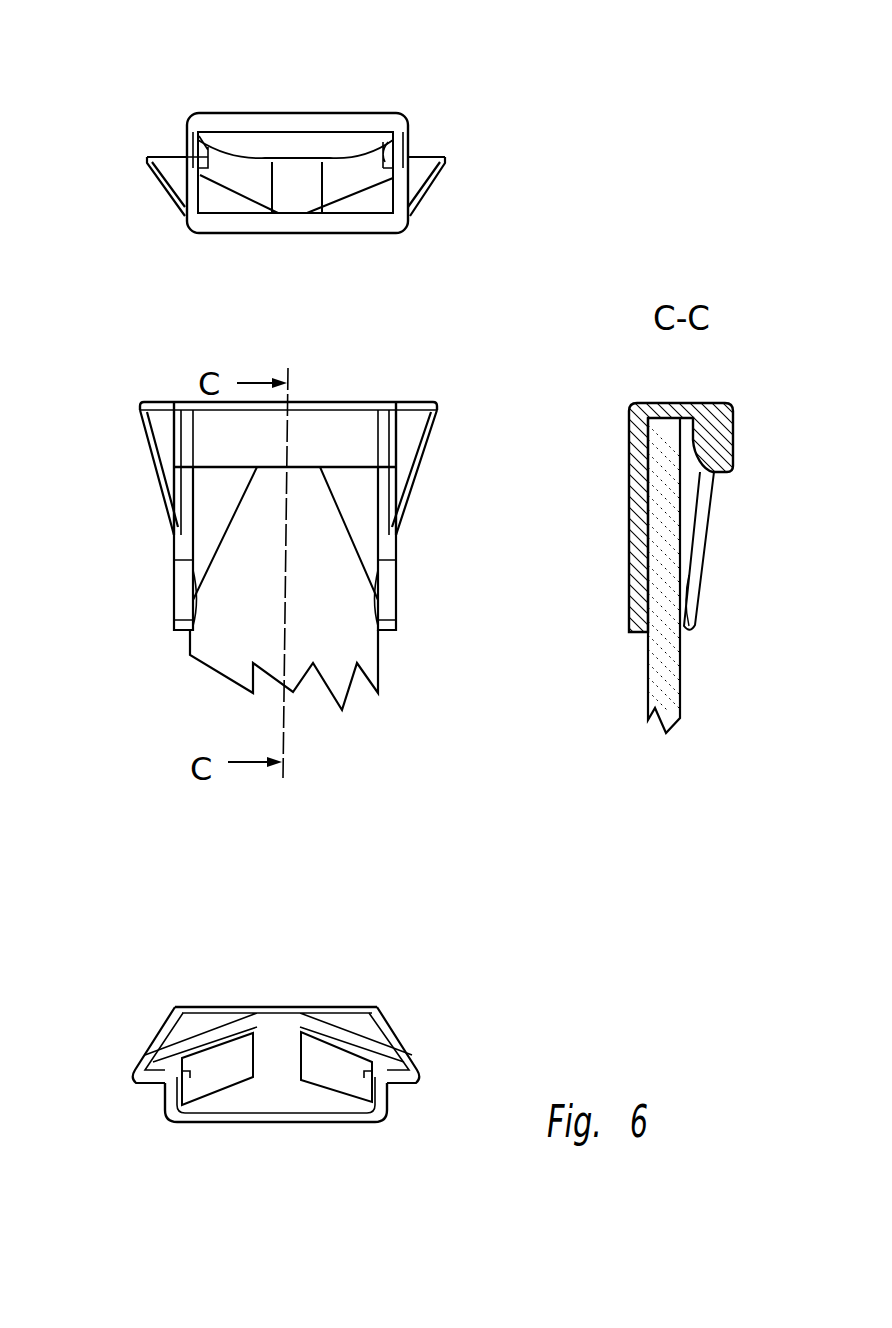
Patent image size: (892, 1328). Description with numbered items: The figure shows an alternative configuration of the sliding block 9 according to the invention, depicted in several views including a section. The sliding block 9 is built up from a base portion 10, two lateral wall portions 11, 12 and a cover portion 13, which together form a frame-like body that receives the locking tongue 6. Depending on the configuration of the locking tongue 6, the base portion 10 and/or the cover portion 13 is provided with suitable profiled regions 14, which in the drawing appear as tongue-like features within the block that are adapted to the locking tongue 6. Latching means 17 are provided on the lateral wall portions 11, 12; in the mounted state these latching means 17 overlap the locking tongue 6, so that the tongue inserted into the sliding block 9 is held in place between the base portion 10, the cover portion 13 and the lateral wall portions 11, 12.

The sliding block 9 is at (400, 100).
The locking tongue 6 is at (213, 647).
The base portion 10 is at (252, 222).
The lateral wall portion 11 is at (410, 215).
The lateral wall portion 12 is at (193, 188).
The cover portion 13 is at (267, 113).
The profiled regions 14 is at (243, 175).
The latching means 17 is at (199, 132).